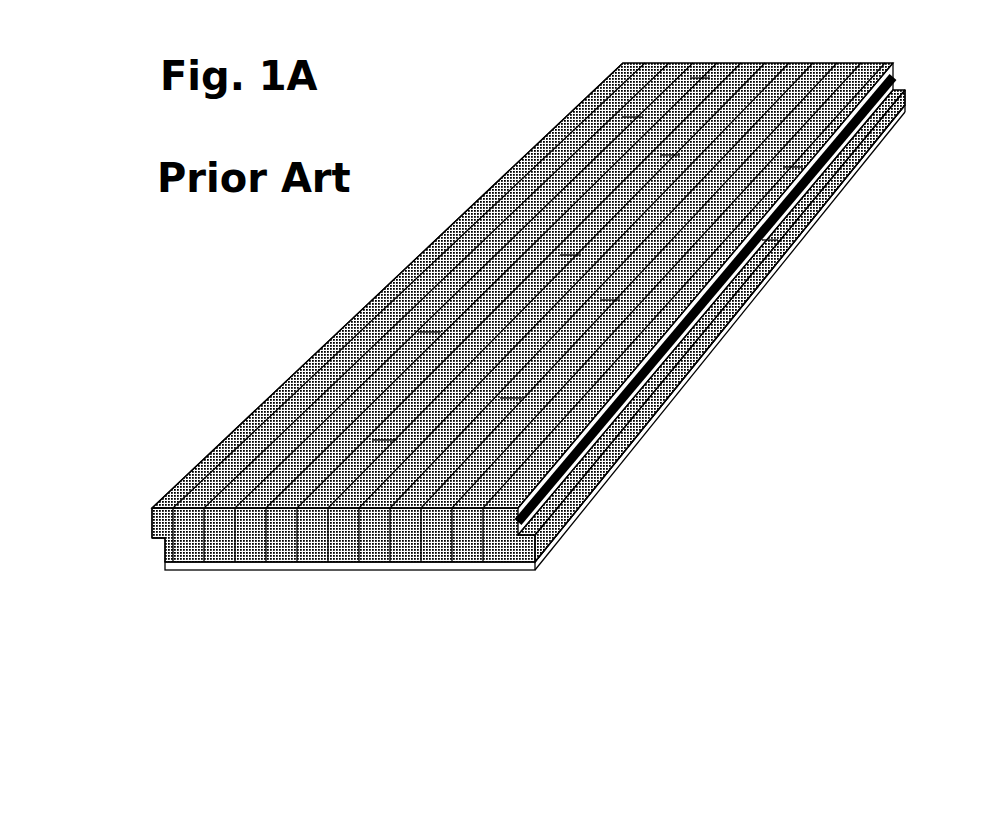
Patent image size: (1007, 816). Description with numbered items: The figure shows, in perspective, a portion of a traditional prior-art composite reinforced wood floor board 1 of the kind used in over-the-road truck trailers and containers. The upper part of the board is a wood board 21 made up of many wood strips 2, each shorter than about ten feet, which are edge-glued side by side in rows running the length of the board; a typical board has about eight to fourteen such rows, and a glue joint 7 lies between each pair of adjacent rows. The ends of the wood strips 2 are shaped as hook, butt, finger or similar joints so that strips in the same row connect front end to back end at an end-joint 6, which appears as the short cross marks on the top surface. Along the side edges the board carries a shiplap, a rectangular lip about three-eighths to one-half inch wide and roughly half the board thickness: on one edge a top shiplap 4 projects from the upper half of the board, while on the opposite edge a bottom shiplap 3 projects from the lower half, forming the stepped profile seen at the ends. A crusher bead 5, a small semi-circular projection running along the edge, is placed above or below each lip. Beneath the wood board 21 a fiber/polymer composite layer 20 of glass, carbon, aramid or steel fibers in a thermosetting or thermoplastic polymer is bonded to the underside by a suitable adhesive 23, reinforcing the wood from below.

The composite wood floor board 1 is at (791, 317).
The wood strips 2 is at (698, 75).
The bottom shiplap 3 is at (550, 539).
The top shiplap 4 is at (147, 522).
The crusher bead 5 is at (162, 548).
The end-joint 6 is at (338, 346).
The glue joint 7 is at (481, 544).
The fiber/polymer composite layer 20 is at (322, 571).
The wood board 21 is at (486, 173).
The adhesive 23 is at (846, 182).